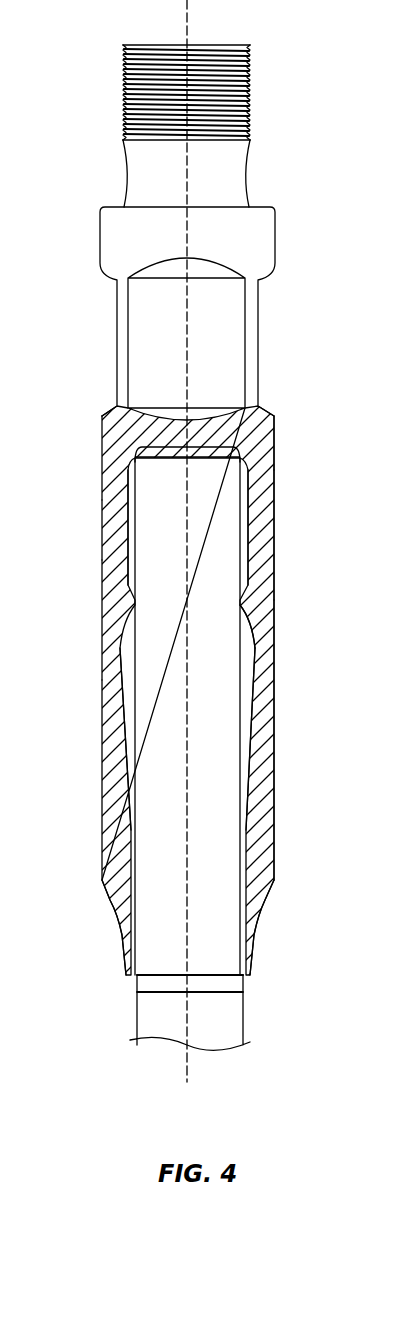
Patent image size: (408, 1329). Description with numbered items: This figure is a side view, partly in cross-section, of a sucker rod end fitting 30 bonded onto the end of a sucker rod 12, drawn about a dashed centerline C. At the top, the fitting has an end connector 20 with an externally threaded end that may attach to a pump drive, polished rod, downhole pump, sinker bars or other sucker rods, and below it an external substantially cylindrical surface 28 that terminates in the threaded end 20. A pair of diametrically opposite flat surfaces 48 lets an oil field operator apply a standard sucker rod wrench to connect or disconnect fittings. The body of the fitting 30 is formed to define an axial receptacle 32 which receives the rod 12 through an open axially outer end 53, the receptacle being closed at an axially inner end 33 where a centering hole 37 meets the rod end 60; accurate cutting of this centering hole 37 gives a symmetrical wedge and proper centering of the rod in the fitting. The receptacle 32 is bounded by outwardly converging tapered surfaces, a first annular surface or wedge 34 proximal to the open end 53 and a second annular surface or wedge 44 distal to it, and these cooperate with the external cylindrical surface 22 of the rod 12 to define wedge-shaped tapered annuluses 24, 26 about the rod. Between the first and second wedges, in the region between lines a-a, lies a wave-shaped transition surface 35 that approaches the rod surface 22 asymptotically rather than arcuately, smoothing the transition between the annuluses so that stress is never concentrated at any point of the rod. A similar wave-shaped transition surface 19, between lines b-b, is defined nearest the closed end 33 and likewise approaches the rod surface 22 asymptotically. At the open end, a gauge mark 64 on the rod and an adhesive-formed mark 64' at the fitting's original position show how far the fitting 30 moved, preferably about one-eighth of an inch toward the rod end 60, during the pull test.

The sucker rod 12 is at (248, 990).
The transition surface 19 is at (272, 469).
The end connector 20 is at (124, 78).
The external cylindrical surface 22 is at (243, 762).
The tapered annulus 24 is at (128, 660).
The tapered annulus 26 is at (128, 522).
The external substantially cylindrical surface 28 is at (262, 412).
The end fitting 30 is at (297, 124).
The axial receptacle 32 is at (248, 940).
The closed axially inner end 33 is at (272, 426).
The first annular surface or wedge 34 is at (258, 712).
The transition surface 35 is at (255, 618).
The centering hole 37 is at (248, 449).
The second annular surface or wedge 44 is at (275, 528).
The flat surfaces 48 is at (143, 328).
The open axially outer end 53 is at (128, 976).
The rod end 60 is at (174, 505).
The gauge mark 64 is at (221, 1012).
The mark 64' is at (152, 953).
The line a- a is at (128, 600).
The line b- b is at (123, 452).
The centerline C is at (190, 557).